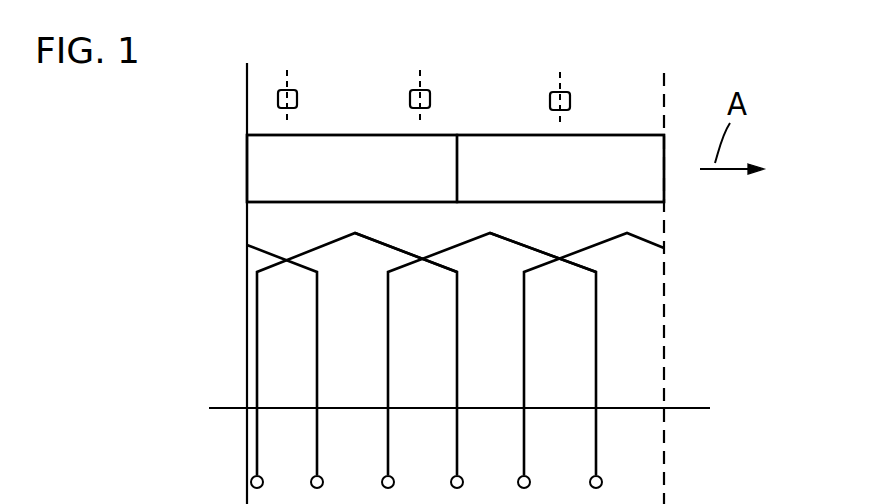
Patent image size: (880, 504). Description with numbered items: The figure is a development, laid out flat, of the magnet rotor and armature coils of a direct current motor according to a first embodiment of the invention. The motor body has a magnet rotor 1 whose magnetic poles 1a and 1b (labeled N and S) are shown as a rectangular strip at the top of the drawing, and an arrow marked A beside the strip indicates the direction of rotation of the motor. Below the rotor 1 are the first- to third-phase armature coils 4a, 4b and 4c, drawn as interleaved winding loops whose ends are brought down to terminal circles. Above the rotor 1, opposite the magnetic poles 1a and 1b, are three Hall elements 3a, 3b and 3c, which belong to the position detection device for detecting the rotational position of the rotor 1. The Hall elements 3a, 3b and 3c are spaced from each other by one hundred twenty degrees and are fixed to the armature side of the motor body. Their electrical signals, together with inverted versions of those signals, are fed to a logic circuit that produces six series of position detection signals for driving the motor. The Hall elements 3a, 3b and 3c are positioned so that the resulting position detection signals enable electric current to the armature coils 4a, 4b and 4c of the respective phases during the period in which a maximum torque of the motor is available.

The magnet rotor 1 is at (487, 182).
The magnetic pole 1a is at (381, 137).
The magnetic pole 1b is at (534, 137).
The Hall element 3a is at (293, 86).
The Hall element 3b is at (430, 86).
The Hall element 3c is at (570, 98).
The first-phase armature coil 4a is at (317, 333).
The second-phase armature coil 4b is at (457, 333).
The third-phase armature coil 4c is at (596, 333).